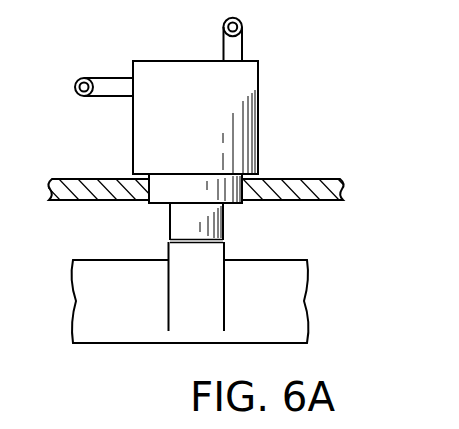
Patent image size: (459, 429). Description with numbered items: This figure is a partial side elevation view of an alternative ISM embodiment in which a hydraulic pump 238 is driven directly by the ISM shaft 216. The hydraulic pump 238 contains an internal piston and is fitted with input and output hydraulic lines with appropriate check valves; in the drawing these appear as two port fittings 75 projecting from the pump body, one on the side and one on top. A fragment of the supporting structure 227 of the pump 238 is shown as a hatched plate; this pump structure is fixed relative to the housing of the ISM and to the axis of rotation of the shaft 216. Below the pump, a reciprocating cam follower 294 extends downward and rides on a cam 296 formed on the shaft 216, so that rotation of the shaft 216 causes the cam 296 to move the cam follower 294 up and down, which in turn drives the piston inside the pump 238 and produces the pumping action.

The tube port 75 is at (98, 78).
The hydraulic pump 238 is at (250, 100).
The supporting structure 227 is at (318, 178).
The cam follower 294 is at (171, 222).
The cam 296 is at (217, 257).
The shaft 216 is at (113, 344).